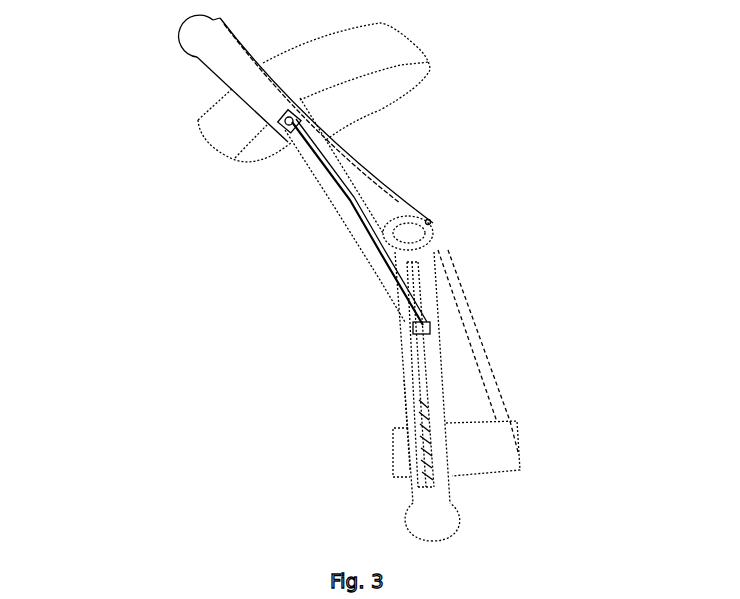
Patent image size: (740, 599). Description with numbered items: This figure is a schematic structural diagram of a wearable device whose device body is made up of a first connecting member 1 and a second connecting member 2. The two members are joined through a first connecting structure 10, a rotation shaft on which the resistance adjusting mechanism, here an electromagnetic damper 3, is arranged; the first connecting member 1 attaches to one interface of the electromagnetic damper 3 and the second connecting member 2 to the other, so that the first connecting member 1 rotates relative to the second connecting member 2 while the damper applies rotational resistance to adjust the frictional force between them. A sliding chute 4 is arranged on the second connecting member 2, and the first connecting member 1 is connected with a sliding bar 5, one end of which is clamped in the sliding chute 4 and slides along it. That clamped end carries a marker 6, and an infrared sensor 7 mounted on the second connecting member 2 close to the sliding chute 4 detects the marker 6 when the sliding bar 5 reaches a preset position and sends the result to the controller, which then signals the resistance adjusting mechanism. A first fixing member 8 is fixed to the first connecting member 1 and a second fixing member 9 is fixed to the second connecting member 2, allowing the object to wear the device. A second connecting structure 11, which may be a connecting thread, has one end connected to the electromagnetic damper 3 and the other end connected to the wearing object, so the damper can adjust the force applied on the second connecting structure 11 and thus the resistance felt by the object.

The first connecting member 1 is at (222, 51).
The second connecting member 2 is at (430, 501).
The electromagnetic damper 3 is at (412, 232).
The sliding chute 4 is at (405, 360).
The sliding bar 5 is at (340, 208).
The marker 6 is at (440, 327).
The infrared sensor 7 is at (407, 393).
The first fixing member 8 is at (387, 44).
The second fixing member 9 is at (482, 447).
The first connecting structure 10 is at (428, 221).
The second connecting structure 11 is at (473, 333).